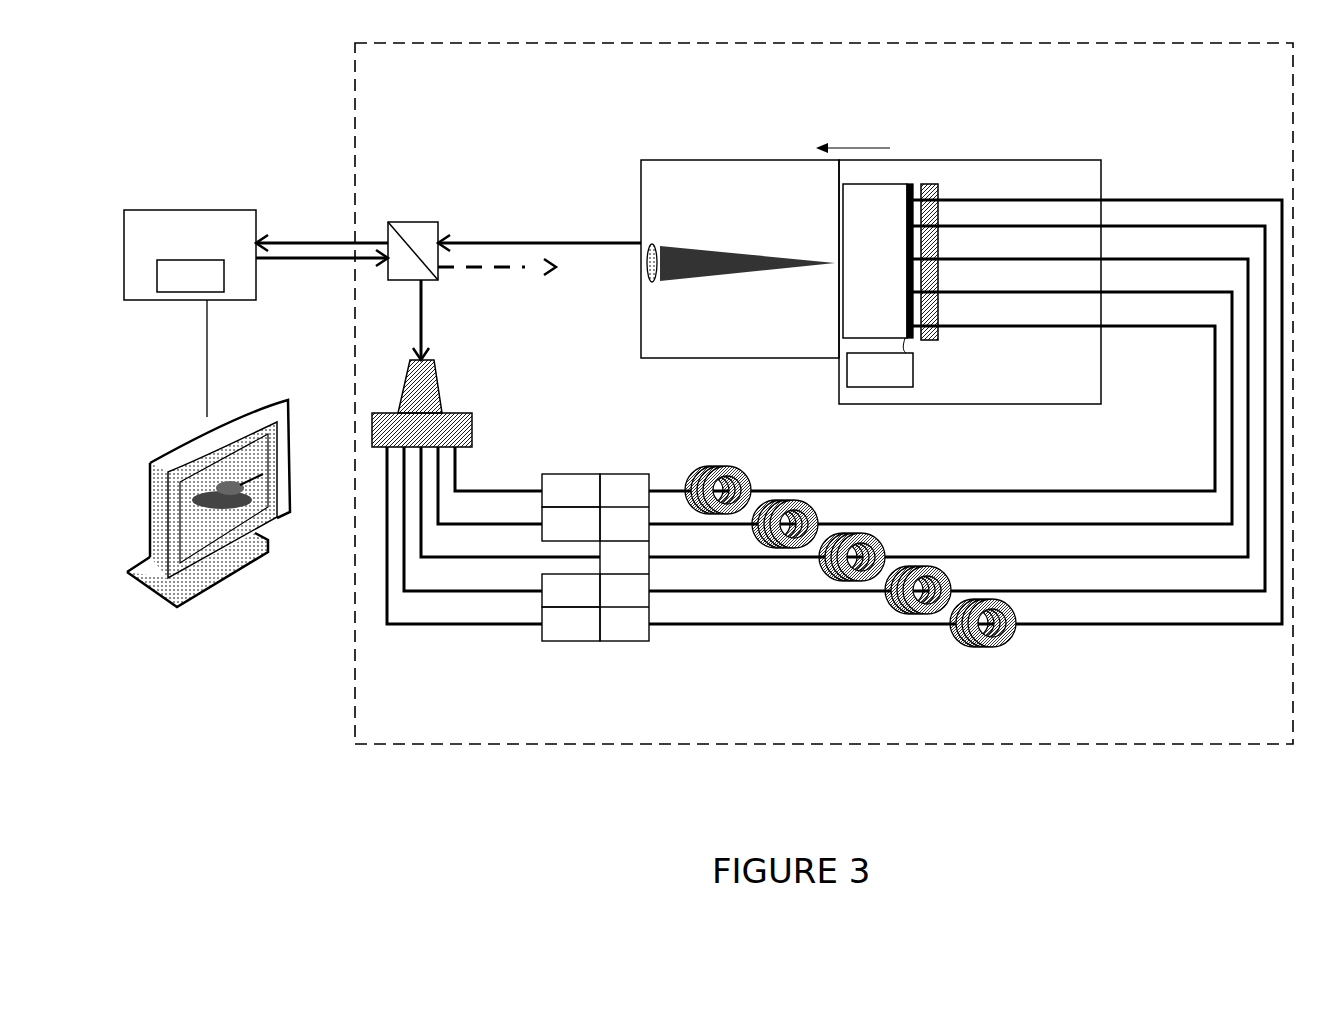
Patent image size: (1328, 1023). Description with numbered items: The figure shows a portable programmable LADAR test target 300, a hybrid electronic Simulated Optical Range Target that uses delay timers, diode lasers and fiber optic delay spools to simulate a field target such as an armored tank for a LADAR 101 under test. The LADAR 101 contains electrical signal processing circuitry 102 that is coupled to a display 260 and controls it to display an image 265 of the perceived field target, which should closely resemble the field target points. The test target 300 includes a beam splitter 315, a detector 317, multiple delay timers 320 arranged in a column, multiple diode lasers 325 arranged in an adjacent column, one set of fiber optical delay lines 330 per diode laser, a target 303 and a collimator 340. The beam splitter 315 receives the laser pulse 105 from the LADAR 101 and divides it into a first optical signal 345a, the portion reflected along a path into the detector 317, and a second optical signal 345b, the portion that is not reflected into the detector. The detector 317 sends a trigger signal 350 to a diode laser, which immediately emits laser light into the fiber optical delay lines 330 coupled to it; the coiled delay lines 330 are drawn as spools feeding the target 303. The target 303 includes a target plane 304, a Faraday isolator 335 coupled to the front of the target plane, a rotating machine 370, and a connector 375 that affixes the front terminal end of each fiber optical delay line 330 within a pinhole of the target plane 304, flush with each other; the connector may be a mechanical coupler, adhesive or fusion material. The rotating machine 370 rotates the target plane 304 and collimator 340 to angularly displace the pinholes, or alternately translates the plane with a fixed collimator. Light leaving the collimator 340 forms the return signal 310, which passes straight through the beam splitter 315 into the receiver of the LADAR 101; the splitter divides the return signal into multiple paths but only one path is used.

The portable programmable LADAR test target 300 is at (672, 43).
The LADAR 101 is at (190, 233).
The electrical signal processing circuitry 102 is at (190, 276).
The return signal 310 is at (290, 243).
The laser pulse 105 is at (290, 260).
The beam splitter 315 is at (413, 222).
The first optical signal 345a is at (424, 315).
The second optical signal 345b is at (522, 270).
The detector 317 is at (472, 425).
The trigger signal 350 is at (478, 491).
The delay timers 320 is at (598, 648).
The diode lasers 325 is at (602, 648).
The collimator 340 is at (664, 160).
The target 303 is at (968, 160).
The target plane 304 is at (910, 184).
The Faraday isolator 335 is at (875, 261).
The connector 375 is at (940, 186).
The rotating machine 370 is at (880, 362).
The fiber optical delay lines 330 is at (722, 515).
The display 260 is at (208, 535).
The image 265 is at (230, 520).